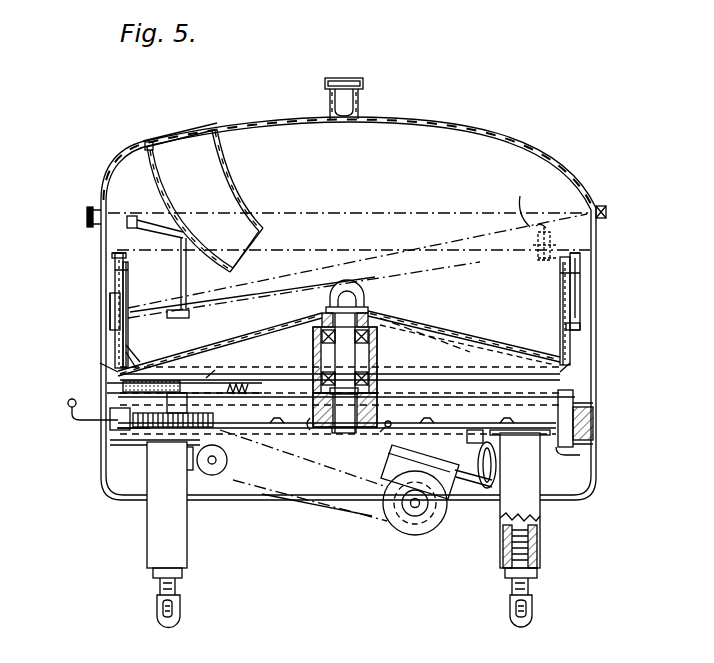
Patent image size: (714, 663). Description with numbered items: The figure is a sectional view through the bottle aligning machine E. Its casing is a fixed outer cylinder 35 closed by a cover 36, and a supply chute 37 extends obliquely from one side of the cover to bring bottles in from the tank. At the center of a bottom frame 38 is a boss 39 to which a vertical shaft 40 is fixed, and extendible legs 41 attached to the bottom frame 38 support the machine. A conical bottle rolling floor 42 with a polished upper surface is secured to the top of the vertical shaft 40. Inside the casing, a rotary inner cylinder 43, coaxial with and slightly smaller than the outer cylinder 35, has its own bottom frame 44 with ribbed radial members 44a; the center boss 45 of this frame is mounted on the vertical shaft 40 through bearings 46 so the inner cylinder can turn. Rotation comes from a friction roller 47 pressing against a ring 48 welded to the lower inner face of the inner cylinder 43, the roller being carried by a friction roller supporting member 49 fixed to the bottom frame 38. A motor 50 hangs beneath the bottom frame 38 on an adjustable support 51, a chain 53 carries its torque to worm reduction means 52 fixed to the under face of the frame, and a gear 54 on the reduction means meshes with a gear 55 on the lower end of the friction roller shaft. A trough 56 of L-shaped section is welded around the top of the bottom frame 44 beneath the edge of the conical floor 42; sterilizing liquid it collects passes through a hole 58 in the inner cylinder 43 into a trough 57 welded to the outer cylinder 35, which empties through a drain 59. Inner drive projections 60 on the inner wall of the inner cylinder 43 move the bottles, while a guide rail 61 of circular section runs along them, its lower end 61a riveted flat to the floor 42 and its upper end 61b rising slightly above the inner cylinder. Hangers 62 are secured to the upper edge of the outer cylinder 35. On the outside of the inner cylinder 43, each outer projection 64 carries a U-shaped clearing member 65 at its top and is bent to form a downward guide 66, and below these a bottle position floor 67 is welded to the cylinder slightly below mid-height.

The bottle aligning machine E is at (242, 116).
The fixed outer cylinder 35 is at (92, 234).
The cover 36 is at (519, 136).
The supply chute 37 is at (235, 194).
The bottom frame 38 is at (387, 425).
The boss 39 is at (358, 429).
The vertical shaft 40 is at (313, 420).
The extendible legs 41 is at (180, 532).
The conical bottle rolling floor 42 is at (466, 334).
The rotary inner cylinder 43 is at (563, 302).
The bottom frame 44 is at (513, 436).
The radial members 44a is at (407, 360).
The center boss 45 is at (378, 348).
The bearings 46 is at (313, 364).
The friction roller 47 is at (120, 386).
The ring 48 is at (100, 368).
The friction roller supporting member 49 is at (206, 378).
The motor 50 is at (415, 535).
The adjustable support 51 is at (457, 492).
The worm reduction means 52 is at (168, 460).
The chain 53 is at (337, 506).
The gear 54 is at (208, 405).
The gear 55 is at (118, 448).
The trough 56 is at (128, 366).
The trough 57 is at (590, 398).
The hole 58 is at (100, 363).
The drain 59 is at (582, 452).
The inner drive projections 60 is at (130, 273).
The guide rail 61 is at (245, 328).
The lower end of guide rail 61a is at (471, 352).
The upper end of guide rail 61b is at (536, 245).
The hangers 62 is at (186, 233).
The outer projection 64 is at (117, 272).
The U-shaped clearing member 65 is at (116, 254).
The guide 66 is at (115, 308).
The bottle position floor 67 is at (580, 327).